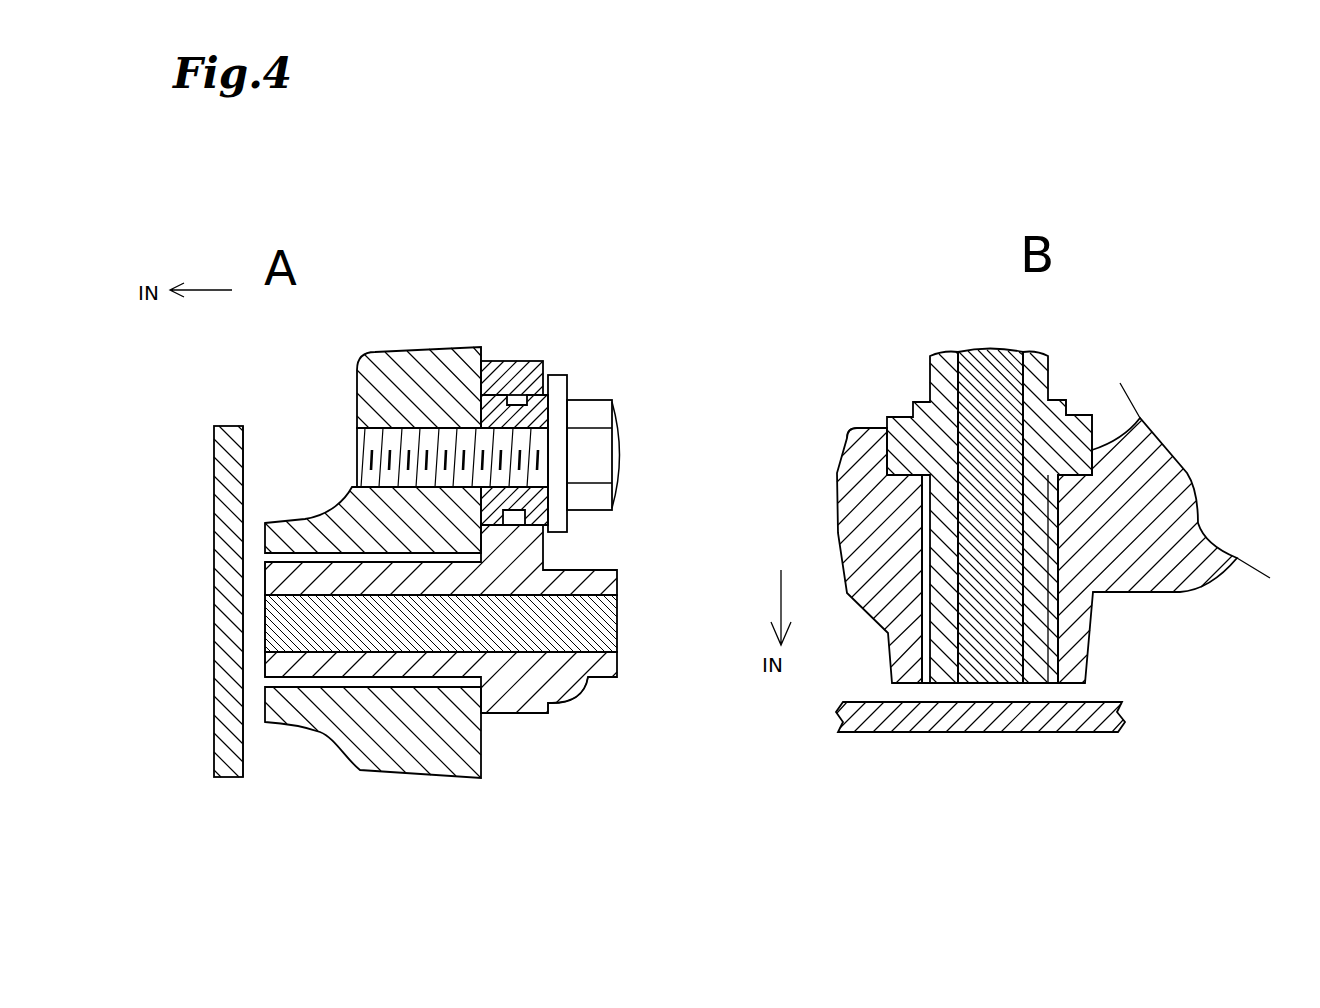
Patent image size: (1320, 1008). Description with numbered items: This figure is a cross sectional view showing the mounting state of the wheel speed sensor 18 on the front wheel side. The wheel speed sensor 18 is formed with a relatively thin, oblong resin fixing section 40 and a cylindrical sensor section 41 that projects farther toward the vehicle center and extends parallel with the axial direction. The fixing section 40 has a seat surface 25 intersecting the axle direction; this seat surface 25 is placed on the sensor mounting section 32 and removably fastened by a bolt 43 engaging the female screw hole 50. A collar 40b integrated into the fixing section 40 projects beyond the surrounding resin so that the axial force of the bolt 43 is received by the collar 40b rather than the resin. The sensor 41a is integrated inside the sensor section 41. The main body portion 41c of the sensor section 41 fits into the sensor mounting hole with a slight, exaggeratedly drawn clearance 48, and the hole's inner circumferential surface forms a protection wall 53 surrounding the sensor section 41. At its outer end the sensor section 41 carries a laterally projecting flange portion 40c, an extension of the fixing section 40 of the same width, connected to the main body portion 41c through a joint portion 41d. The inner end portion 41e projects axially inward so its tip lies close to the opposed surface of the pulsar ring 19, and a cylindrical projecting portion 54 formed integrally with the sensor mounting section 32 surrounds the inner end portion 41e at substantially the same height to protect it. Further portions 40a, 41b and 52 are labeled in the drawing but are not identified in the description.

The wheel speed sensor 18 is at (500, 386).
The pulsar ring 19 is at (228, 426).
The seat surface 25 is at (478, 375).
The sensor mounting section 32 is at (403, 368).
The fixing section 40 is at (533, 367).
The bolt shaft 40a is at (500, 421).
The collar 40b is at (545, 375).
The flange portion 40c is at (520, 707).
The sensor section 41 is at (683, 561).
The sensor 41a is at (603, 625).
The bracket wall portion 41b is at (605, 575).
The main body portion 41c is at (347, 580).
The joint portion 41d is at (458, 677).
The inner end portion 41e is at (275, 582).
The bolt 43 is at (595, 410).
The clearance 48 is at (272, 682).
The female screw hole 50 is at (372, 437).
The rounded edge portion 52 is at (858, 437).
The protection wall 53 is at (397, 680).
The projecting portion 54 is at (267, 540).